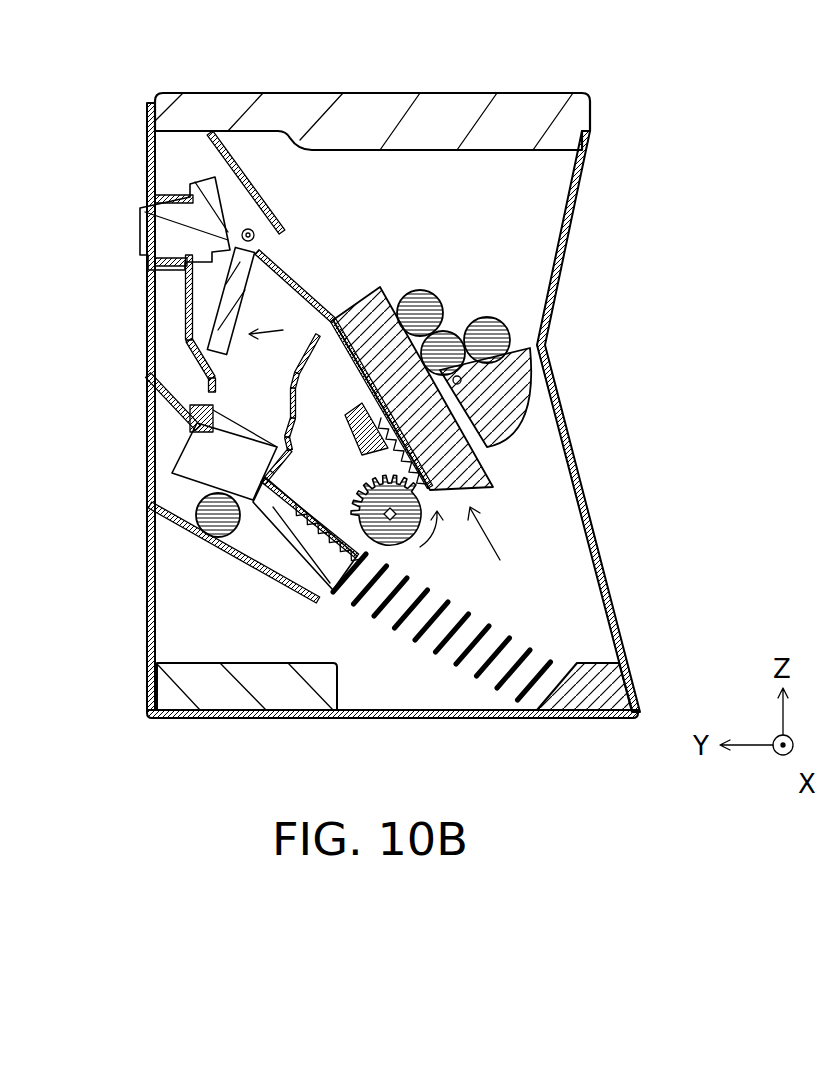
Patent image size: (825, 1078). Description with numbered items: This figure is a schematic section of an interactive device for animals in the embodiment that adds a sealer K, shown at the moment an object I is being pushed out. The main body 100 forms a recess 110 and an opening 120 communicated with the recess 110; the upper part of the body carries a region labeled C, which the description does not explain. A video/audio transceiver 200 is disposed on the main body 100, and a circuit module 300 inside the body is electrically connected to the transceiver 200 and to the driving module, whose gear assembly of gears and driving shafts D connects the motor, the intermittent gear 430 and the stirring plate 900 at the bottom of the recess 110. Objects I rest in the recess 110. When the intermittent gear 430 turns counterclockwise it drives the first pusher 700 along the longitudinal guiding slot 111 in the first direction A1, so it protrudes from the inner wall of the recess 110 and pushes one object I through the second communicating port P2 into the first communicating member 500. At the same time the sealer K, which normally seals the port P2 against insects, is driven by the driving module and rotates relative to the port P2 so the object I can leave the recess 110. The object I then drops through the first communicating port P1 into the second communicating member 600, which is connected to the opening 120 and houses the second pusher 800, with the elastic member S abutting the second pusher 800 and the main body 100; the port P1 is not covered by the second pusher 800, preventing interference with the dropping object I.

The main body 100 is at (131, 115).
The recess 110 is at (505, 258).
The opening 120 is at (162, 412).
The cover C is at (480, 115).
The driving shaft D is at (245, 228).
The second communicating port P2 is at (297, 367).
The first communicating port P1 is at (210, 380).
The guiding slot 111 is at (335, 318).
The object I is at (420, 310).
The video/audio transceiver 200 is at (158, 234).
The first communicating member 500 is at (203, 293).
The sealer K is at (183, 340).
The second communicating member 600 is at (150, 547).
The first pusher 700 is at (455, 468).
The second pusher 800 is at (283, 552).
The stirring plate 900 is at (515, 400).
The circuit module 300 is at (200, 697).
The intermittent gear 430 is at (392, 548).
The elastic member S is at (503, 688).
The first direction A1 is at (487, 532).